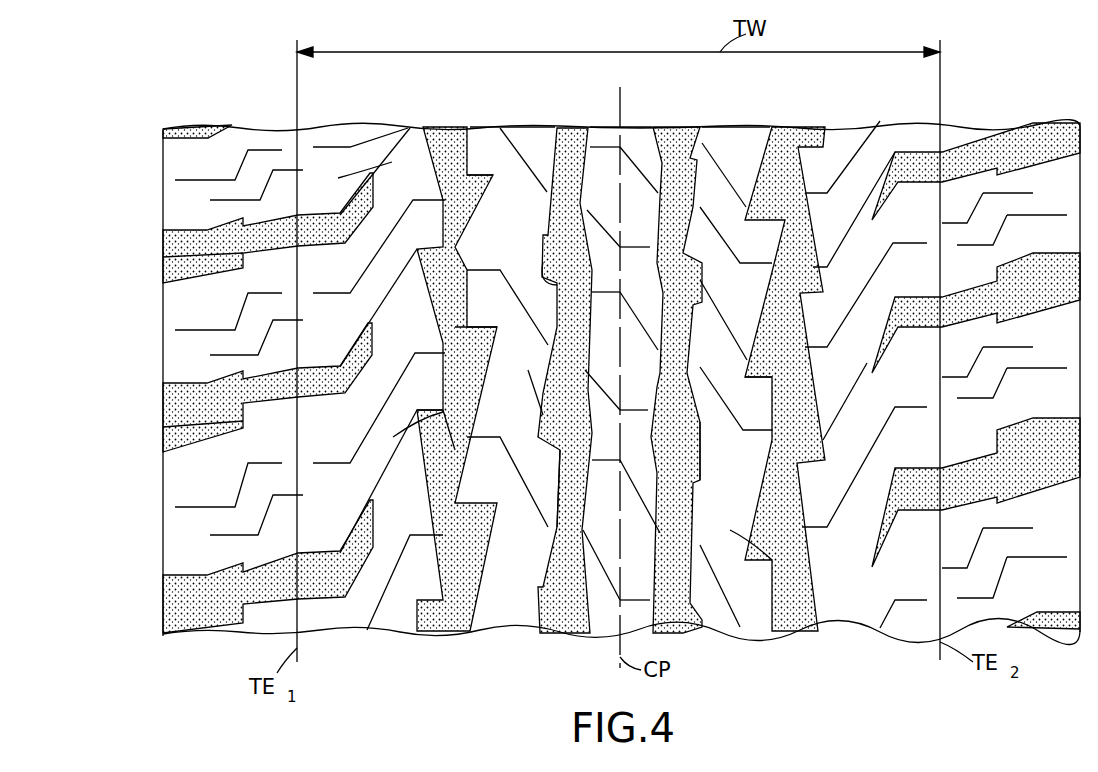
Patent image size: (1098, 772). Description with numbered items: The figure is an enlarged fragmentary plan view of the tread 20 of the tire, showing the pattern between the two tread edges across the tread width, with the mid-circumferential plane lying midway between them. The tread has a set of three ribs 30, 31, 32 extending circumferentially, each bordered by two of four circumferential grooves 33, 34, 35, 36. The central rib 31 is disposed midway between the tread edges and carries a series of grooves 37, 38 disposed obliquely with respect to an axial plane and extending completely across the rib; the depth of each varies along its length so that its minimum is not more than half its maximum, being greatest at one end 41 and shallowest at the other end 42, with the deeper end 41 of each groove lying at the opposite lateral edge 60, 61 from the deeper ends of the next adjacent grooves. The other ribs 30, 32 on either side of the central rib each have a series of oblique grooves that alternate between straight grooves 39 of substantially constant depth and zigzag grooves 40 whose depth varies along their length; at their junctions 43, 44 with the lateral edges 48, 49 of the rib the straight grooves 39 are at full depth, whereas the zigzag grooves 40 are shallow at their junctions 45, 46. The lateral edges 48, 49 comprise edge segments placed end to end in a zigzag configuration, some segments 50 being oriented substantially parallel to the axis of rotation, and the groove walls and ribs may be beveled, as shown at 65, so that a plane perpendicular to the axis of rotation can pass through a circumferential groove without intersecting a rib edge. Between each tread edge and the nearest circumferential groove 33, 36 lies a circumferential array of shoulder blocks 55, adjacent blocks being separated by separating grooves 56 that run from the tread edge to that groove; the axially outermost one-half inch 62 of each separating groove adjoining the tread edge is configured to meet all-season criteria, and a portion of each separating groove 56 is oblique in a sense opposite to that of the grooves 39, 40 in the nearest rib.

The tire tread 20 is at (1057, 106).
The rib 30 is at (517, 127).
The central rib 31 is at (641, 128).
The rib 32 is at (745, 126).
The circumferentially extending groove 33 is at (447, 127).
The circumferentially extending groove 34 is at (572, 128).
The circumferentially extending groove 35 is at (687, 126).
The circumferentially extending groove 36 is at (800, 123).
The obliquely extending groove 37 is at (604, 207).
The obliquely extending groove 38 is at (601, 298).
The straight groove 39 is at (515, 222).
The zigzag groove 40 is at (518, 290).
The deeper end 41 is at (660, 348).
The other end 42 is at (600, 283).
The junction 43 is at (493, 345).
The junction 44 is at (527, 380).
The junction 45 is at (468, 432).
The junction 46 is at (549, 525).
The lateral edge 48 is at (465, 375).
The lateral edge 49 is at (553, 275).
The edge segment 50 is at (769, 368).
The shoulder block 55 is at (344, 340).
The separating groove 56 is at (333, 212).
The lateral edge 60 is at (557, 466).
The lateral edge 61 is at (682, 451).
The axially outermost one-half inch 62 is at (325, 236).
The bevel 65 is at (569, 486).